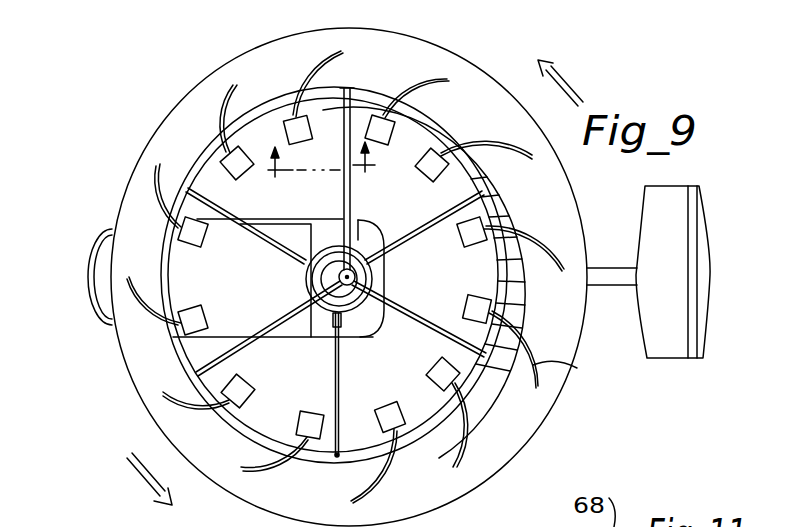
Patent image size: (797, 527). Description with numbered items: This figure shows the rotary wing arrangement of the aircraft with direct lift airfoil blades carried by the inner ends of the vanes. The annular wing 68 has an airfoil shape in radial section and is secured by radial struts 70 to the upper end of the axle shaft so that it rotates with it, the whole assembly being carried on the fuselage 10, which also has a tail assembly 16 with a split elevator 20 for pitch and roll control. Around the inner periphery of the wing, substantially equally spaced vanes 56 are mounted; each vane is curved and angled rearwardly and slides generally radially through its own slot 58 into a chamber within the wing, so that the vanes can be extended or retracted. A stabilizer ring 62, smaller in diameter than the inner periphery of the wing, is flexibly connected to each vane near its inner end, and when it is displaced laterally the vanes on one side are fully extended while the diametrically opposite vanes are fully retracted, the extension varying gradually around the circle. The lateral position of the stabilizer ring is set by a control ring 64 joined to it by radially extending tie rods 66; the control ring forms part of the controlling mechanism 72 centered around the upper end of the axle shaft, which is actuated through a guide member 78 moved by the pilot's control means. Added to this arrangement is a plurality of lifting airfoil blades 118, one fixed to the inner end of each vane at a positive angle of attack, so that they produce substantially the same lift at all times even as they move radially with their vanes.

The fuselage 10 is at (97, 315).
The tail assembly 16 is at (611, 262).
The split elevator 20 is at (677, 343).
The vanes 56 is at (520, 320).
The slot 58 is at (568, 365).
The stabilizer ring 62 is at (160, 243).
The control ring 64 is at (380, 330).
The tie rods 66 is at (267, 243).
The wing 68 is at (422, 46).
The radial struts 70 is at (343, 181).
The controlling mechanism 72 is at (377, 273).
The guide member 78 is at (328, 310).
The lifting airfoil blades 118 is at (233, 167).